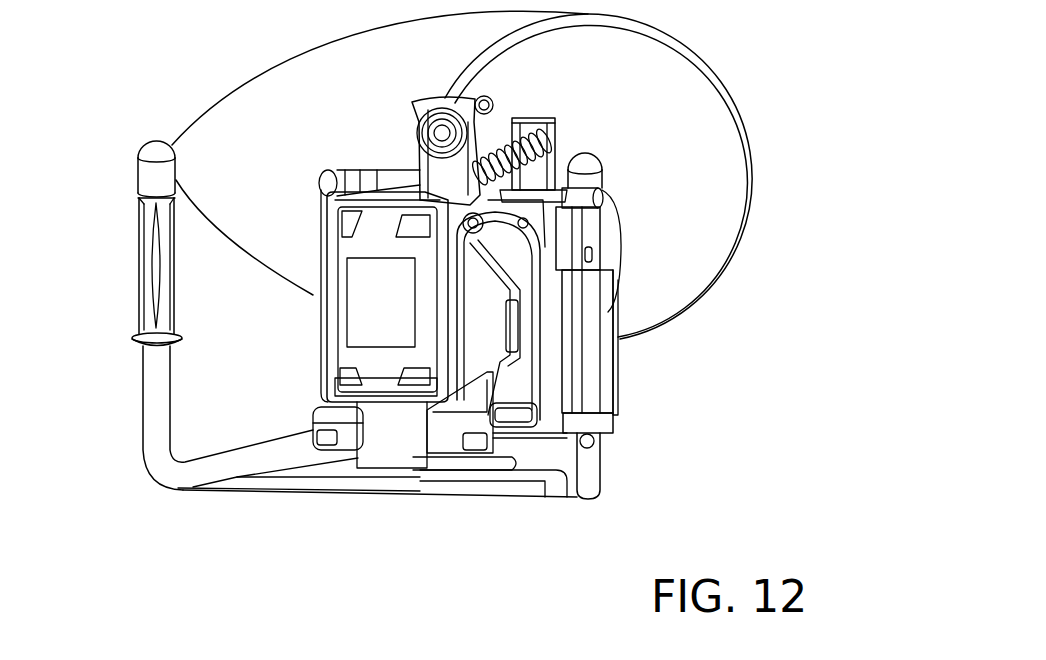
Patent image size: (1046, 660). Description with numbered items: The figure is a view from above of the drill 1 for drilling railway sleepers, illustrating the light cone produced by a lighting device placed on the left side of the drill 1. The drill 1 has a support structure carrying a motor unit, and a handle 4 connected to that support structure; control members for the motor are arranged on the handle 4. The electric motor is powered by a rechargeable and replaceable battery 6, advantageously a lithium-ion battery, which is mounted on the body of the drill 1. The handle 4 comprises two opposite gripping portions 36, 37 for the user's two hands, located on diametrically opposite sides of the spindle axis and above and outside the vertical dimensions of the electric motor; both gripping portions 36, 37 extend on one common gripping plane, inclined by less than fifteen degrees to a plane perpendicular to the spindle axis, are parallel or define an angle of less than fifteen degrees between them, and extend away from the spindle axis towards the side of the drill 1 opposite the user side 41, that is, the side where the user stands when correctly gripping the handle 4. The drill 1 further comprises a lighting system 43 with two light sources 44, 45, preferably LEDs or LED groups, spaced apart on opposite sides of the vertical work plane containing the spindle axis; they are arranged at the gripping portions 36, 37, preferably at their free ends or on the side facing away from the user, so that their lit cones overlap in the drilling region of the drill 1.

The drill 1 is at (628, 420).
The handle 4 is at (153, 410).
The battery 6 is at (358, 308).
The gripping portion 36 is at (138, 275).
The gripping portion 37 is at (600, 372).
The user side 41 is at (423, 569).
The lighting system 43 is at (462, 175).
The light source 44 is at (613, 162).
The light source 45 is at (185, 168).